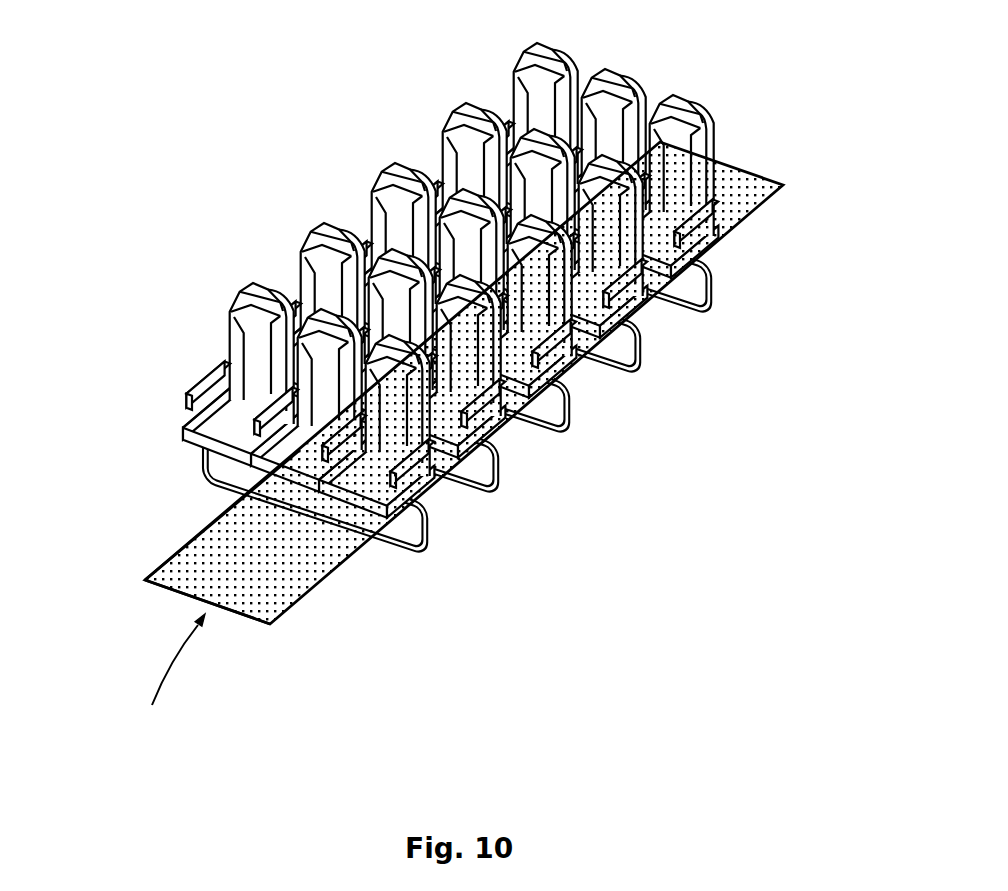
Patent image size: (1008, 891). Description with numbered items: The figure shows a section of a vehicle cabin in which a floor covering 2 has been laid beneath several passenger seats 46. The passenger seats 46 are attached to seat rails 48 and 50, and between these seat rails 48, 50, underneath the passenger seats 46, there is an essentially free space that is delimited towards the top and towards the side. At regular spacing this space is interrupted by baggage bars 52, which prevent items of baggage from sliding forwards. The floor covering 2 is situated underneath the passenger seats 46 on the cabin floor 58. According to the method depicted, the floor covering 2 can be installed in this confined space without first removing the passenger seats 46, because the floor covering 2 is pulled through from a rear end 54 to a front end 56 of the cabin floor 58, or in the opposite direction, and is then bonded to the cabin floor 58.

The floor covering 2 is at (758, 183).
The passenger seats 46 is at (534, 86).
The seat rail 48 is at (723, 238).
The seat rail 50 is at (205, 529).
The baggage bars 52 is at (293, 527).
The rear end 54 is at (733, 151).
The front end 56 is at (177, 677).
The cabin floor 58 is at (250, 619).